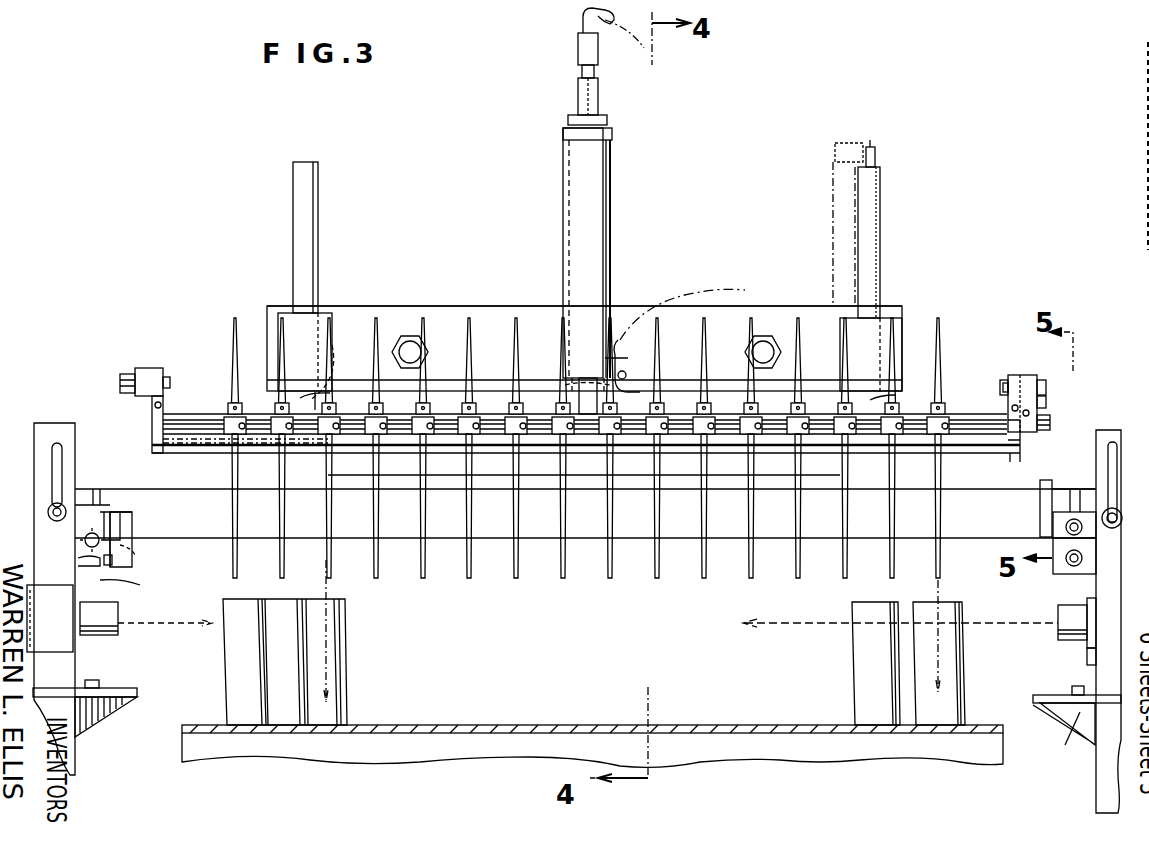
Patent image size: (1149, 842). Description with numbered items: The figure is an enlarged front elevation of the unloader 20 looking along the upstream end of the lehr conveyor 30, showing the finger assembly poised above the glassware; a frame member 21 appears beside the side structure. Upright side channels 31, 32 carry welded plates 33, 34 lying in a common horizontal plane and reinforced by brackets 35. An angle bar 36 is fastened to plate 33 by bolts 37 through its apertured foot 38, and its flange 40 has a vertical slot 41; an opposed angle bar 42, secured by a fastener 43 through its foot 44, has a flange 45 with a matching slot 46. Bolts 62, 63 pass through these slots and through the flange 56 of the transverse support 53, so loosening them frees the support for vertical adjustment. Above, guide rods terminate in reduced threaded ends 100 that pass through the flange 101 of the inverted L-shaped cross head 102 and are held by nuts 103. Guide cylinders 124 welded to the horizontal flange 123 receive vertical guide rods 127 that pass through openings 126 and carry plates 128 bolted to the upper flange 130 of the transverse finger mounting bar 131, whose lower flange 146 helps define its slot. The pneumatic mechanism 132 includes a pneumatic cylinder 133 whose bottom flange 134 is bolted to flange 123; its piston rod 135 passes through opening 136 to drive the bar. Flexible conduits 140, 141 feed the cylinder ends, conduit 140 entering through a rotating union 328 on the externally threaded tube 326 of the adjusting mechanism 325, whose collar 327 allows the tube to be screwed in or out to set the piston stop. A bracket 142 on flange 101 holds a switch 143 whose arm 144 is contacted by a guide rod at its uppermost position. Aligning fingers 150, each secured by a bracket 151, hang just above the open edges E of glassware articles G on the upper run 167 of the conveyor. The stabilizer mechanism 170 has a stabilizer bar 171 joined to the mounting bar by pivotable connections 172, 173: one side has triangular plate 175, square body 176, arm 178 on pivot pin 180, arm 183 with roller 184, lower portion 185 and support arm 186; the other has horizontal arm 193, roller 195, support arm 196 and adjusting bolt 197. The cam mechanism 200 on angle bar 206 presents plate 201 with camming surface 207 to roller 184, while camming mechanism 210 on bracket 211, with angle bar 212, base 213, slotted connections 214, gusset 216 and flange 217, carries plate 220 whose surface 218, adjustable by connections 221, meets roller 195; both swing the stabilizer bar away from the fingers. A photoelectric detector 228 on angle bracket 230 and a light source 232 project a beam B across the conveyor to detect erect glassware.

The unloader 20 is at (793, 120).
The frame 21 is at (110, 768).
The lehr conveyor 30 is at (720, 740).
The side channel 31 is at (78, 752).
The side channel 32 is at (1095, 790).
The plate 33 is at (120, 690).
The plate 34 is at (1033, 698).
The brackets 35 is at (110, 715).
The angle bar 36 is at (38, 474).
The bolts 37 is at (95, 675).
The apertured foot 38 is at (45, 690).
The flange 40 is at (72, 440).
The elongated vertical slot 41 is at (58, 440).
The angle bar 42 is at (1096, 660).
The bolt 43 is at (1075, 686).
The foot 44 is at (1060, 710).
The flange 45 is at (1108, 430).
The vertical elongated slot 46 is at (1108, 465).
The transverse support 53 is at (485, 540).
The flange 56 is at (208, 540).
The bolt 62 is at (50, 505).
The bolt 63 is at (1110, 528).
The reduced threaded end portion 100 is at (395, 338).
The flange 101 is at (735, 322).
The cross head 102 is at (486, 290).
The nut 103 is at (442, 330).
The horizontal flange 123 is at (440, 392).
The vertical guide cylinder 124 is at (325, 315).
The opening 126 is at (338, 342).
The vertical guide rod 127 is at (318, 212).
The plate 128 is at (345, 395).
The upper flange 130 is at (180, 400).
The transverse finger mounting bar 131 is at (445, 455).
The pneumatic mechanism 132 is at (628, 208).
The pneumatic cylinder 133 is at (598, 238).
The bottom peripheral flange 134 is at (585, 370).
The piston rod 135 is at (631, 366).
The opening 136 is at (565, 375).
The flexible conduit 140 is at (612, 40).
The flexible conduit 141 is at (622, 340).
The vertical bracket 142 is at (832, 220).
The switch 143 is at (852, 138).
The movable switch arm 144 is at (876, 150).
The lower flange 146 is at (545, 455).
The aligning fingers 150 is at (270, 498).
The bracket 151 is at (472, 440).
The upper run 167 is at (478, 722).
The stabilizer mechanism 170 is at (955, 470).
The stabilizer bar 171 is at (582, 460).
The pivotable connection 172 is at (1000, 345).
The pivotable connection 173 is at (140, 350).
The triangularly shaped plate 175 is at (1003, 390).
The square body 176 is at (1060, 400).
The arm 178 is at (1030, 375).
The pivot pin 180 is at (1000, 380).
The arm 183 is at (1050, 388).
The roller 184 is at (1050, 422).
The portion 185 is at (1000, 440).
The support arm 186 is at (1013, 460).
The horizontal arm 193 is at (150, 368).
The roller 195 is at (125, 365).
The vertical support arm 196 is at (152, 438).
The bolt 197 is at (155, 405).
The cam mechanism 200 is at (1030, 528).
The inverted L-shaped plate 201 is at (1052, 502).
The angle bar 206 is at (1065, 580).
The camming surface 207 is at (1040, 515).
The camming mechanism 210 is at (158, 506).
The bracket 211 is at (108, 495).
The angle bar 212 is at (145, 592).
The base portion 213 is at (150, 510).
The slot and bolt connections 214 is at (85, 543).
The gusset plate 216 is at (125, 500).
The vertical flange 217 is at (120, 528).
The camming surface 218 is at (138, 572).
The plate 220 is at (140, 548).
The slot and bolt connections 221 is at (71, 572).
The photoelectric light detector 228 is at (56, 618).
The angle bracket 230 is at (118, 603).
The light source 232 is at (1058, 620).
The adjusting mechanism 325 is at (612, 90).
The externally threaded tube 326 is at (578, 90).
The internally threaded collar 327 is at (607, 120).
The rotating union 328 is at (580, 36).
The beam of light B is at (183, 625).
The upwardly opening end or edge E is at (306, 590).
The glassware articles G is at (358, 657).